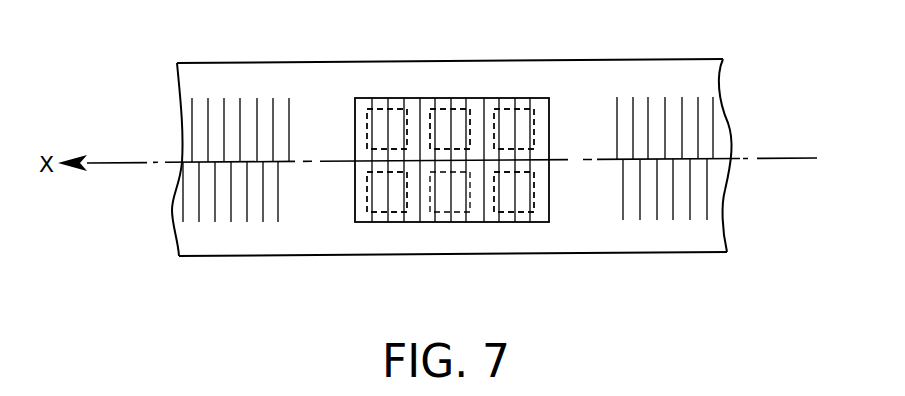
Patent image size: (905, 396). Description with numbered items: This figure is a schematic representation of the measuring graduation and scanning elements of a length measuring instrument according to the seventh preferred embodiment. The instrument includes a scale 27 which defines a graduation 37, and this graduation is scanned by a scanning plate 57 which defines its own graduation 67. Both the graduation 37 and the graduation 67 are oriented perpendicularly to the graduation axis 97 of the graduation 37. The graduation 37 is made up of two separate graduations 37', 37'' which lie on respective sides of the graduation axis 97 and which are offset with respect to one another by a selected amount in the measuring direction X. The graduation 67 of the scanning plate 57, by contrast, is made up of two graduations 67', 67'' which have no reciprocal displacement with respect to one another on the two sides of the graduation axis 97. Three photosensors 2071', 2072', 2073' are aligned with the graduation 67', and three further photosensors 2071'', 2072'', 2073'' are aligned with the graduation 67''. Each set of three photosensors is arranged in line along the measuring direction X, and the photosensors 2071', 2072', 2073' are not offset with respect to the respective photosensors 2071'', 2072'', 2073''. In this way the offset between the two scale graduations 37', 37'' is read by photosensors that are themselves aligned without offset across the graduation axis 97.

The scale 27 is at (650, 238).
The graduation 37 is at (206, 166).
The graduation 37' is at (730, 123).
The graduation 37'' is at (734, 189).
The scanning plate 57 is at (440, 222).
The graduation 67 is at (385, 238).
The graduation 67' is at (426, 81).
The graduation 67'' is at (522, 238).
The graduation axis 97 is at (770, 158).
The photosensor 2071' is at (402, 81).
The photosensor 2072' is at (465, 81).
The photosensor 2073' is at (528, 81).
The photosensor 2071'' is at (402, 256).
The photosensor 2072'' is at (466, 256).
The photosensor 2073'' is at (530, 256).